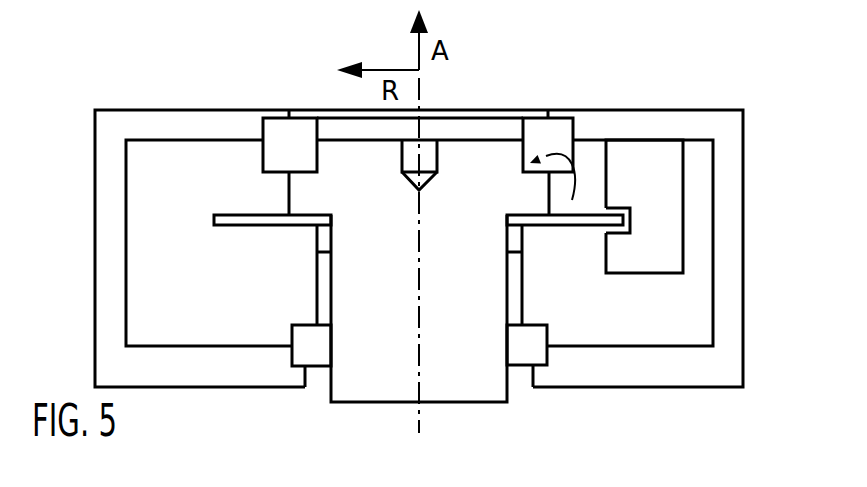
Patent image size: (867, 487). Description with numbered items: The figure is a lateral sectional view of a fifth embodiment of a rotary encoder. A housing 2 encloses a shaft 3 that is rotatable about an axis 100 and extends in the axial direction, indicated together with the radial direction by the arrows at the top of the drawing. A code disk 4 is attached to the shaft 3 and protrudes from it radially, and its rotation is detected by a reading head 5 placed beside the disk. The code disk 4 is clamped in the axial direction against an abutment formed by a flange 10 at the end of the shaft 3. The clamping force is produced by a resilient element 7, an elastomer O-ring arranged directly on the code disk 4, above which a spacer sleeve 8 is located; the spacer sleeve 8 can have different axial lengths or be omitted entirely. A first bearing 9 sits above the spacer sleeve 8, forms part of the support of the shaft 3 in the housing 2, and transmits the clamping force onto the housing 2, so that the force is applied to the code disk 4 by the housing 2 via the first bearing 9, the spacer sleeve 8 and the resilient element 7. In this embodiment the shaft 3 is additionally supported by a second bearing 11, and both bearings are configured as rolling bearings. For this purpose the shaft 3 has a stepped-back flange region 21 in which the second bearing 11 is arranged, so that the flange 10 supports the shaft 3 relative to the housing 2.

The housing 2 is at (737, 288).
The shaft 3 is at (466, 390).
The code disk 4 is at (590, 220).
The reading head 5 is at (672, 173).
The resilient element 7 is at (518, 240).
The spacer sleeve 8 is at (518, 297).
The first bearing 9 is at (523, 357).
The flange 10 is at (302, 197).
The second bearing 11 is at (543, 126).
The flange region 21 is at (564, 183).
The axis 100 is at (398, 266).